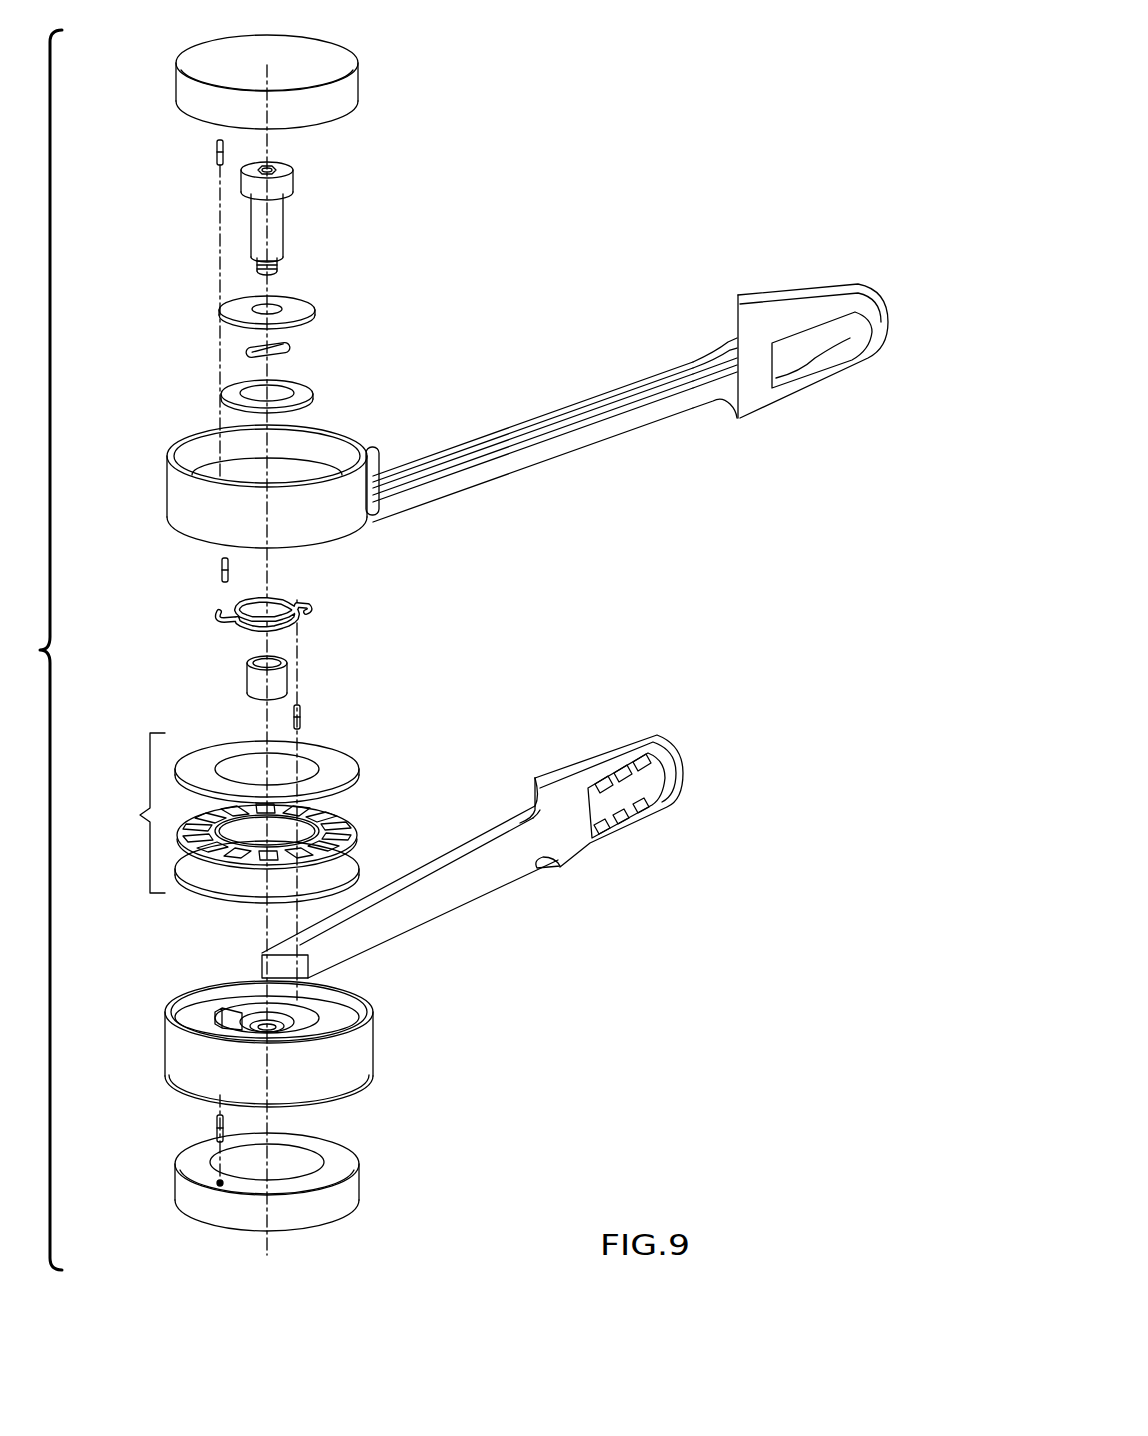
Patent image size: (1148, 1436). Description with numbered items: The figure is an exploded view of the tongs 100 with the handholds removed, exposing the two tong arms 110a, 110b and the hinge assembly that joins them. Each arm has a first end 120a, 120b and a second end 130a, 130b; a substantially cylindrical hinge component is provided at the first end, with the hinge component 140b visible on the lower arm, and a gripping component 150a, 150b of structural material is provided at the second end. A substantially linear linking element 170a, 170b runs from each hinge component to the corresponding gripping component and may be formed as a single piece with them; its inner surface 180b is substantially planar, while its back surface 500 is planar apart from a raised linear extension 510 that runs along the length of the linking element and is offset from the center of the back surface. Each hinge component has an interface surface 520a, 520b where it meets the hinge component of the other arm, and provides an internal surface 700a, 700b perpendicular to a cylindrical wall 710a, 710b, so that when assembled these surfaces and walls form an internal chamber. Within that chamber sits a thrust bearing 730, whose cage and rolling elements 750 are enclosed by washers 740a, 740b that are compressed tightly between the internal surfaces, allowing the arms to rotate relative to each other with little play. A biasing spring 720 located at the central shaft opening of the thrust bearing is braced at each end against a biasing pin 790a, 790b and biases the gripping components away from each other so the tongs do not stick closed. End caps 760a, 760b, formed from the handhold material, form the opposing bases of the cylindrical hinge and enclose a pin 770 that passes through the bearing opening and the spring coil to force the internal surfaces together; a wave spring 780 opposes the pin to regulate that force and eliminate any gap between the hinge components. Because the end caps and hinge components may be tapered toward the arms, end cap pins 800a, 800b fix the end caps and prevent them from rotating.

The tongs 100 is at (823, 522).
The tong arm 110a is at (541, 418).
The tong arm 110b is at (355, 861).
The first end 120a is at (388, 464).
The first end 120b is at (256, 963).
The second end 130a is at (848, 305).
The second end 130b is at (675, 766).
The hinge component 140b is at (182, 1060).
The gripping component 150a is at (862, 280).
The gripping component 150b is at (655, 737).
The linking element 170a is at (670, 367).
The linking element 170b is at (438, 912).
The inner surface 180b is at (485, 860).
The back surface 500 is at (573, 442).
The linear extension 510 is at (648, 393).
The interface surface 520a is at (222, 580).
The interface surface 520b is at (214, 1014).
The internal surface 700a is at (247, 473).
The internal surface 700b is at (207, 1010).
The cylindrical wall 710a is at (178, 466).
The cylindrical wall 710b is at (362, 1057).
The biasing spring 720 is at (303, 610).
The thrust bearing 730 is at (266, 790).
The washer 740a is at (327, 757).
The washer 740b is at (350, 868).
The cage and rolling elements 750 is at (337, 817).
The end cap 760a is at (350, 94).
The end cap 760b is at (212, 1208).
The pin 770 is at (278, 226).
The wave spring 780 is at (292, 350).
The biasing pin 790a is at (223, 617).
The biasing pin 790b is at (303, 717).
The end cap pin 800a is at (216, 157).
The end cap pin 800b is at (217, 1123).